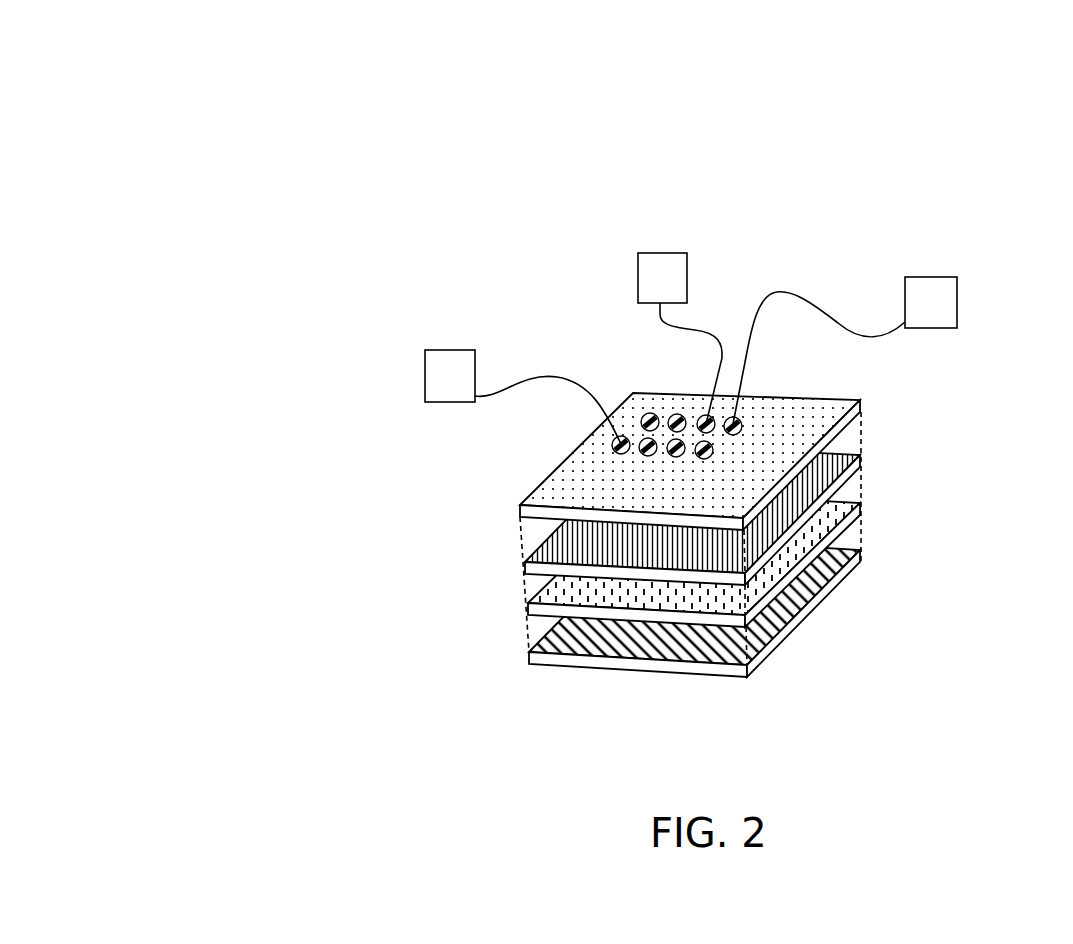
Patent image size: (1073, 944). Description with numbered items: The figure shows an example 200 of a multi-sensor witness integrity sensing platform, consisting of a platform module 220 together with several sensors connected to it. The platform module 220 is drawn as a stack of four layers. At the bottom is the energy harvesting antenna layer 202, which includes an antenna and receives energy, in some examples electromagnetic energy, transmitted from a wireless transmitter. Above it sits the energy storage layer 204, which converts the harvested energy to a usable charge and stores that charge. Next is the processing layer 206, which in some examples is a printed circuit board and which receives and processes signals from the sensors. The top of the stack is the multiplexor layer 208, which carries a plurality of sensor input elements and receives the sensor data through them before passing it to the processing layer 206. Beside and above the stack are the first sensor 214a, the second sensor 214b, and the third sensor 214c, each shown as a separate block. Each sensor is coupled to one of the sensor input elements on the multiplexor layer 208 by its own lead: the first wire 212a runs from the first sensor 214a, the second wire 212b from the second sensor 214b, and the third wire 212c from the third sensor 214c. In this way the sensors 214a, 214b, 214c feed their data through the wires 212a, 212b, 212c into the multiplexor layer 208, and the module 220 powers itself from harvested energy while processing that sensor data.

The example of a multi-sensor witness integrity sensing platform 200 is at (238, 79).
The energy harvesting antenna layer 202 is at (863, 557).
The energy storage layer 204 is at (863, 508).
The processing layer 206 is at (863, 458).
The multiplexor layer 208 is at (863, 407).
The first wire 212a is at (510, 387).
The second wire 212b is at (695, 327).
The third wire 212c is at (817, 305).
The first sensor 214a is at (452, 347).
The second sensor 214b is at (673, 252).
The third sensor 214c is at (932, 275).
The multi-sensor witness integrity sensing platform module 220 is at (510, 607).